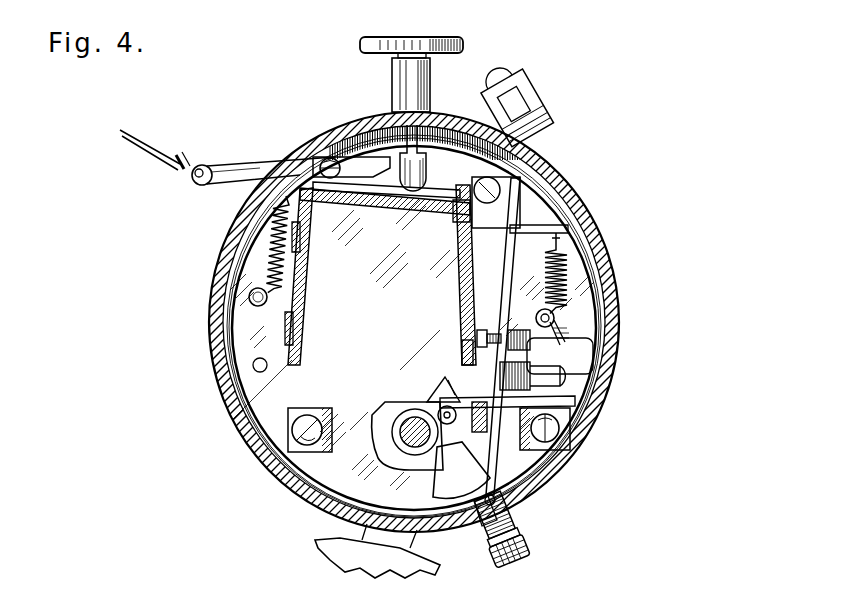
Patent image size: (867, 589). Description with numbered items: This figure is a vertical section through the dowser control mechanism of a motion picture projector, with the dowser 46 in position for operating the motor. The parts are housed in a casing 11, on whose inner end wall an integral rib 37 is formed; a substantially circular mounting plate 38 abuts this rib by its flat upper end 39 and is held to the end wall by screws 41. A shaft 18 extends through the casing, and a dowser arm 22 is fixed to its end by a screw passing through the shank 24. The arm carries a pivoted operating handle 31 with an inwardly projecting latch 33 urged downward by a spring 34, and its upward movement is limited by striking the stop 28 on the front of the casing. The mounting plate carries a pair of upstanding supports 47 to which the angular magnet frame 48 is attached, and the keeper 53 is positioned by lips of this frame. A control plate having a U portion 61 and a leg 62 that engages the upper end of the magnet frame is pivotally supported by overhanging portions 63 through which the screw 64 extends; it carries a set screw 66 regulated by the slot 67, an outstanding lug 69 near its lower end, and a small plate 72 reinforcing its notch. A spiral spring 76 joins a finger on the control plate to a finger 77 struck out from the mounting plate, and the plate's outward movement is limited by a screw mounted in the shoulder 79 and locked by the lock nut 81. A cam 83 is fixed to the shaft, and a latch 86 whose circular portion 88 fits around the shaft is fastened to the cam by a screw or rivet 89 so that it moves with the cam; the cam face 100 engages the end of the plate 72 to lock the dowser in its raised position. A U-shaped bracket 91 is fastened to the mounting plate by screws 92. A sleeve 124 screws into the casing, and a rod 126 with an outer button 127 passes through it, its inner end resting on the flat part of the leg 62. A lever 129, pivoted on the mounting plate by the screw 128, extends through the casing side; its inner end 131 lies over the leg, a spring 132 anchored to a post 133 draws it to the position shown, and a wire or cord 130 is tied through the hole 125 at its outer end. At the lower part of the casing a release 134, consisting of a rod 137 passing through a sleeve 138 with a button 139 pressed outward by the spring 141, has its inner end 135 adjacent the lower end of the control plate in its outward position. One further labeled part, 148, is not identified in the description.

The casing 11 is at (570, 190).
The rib 37 is at (556, 167).
The dowser arm 22 is at (516, 149).
The button 127 is at (465, 46).
The sleeve 124 is at (404, 73).
The rod 126 is at (426, 128).
The operating handle 31 is at (533, 82).
The latch 33 is at (538, 104).
The spring 34 is at (535, 128).
The inner end of lever 131 is at (362, 162).
The U portion 61 is at (437, 181).
The screw 128 is at (326, 158).
The lever 129 is at (231, 168).
The hole 125 is at (196, 184).
The wire or cord 130 is at (154, 154).
The leg 62 is at (420, 208).
The frame left bar 148 is at (305, 300).
The upstanding supports 47 is at (433, 294).
The keeper 53 is at (460, 294).
The screw 64 is at (453, 218).
The mounting plate 38 is at (412, 345).
The spring 132 is at (272, 233).
The post 133 is at (249, 297).
The screws 41 is at (258, 372).
The overhanging portions 63 is at (496, 203).
The shank 24 is at (537, 225).
The flat upper end 39 is at (506, 278).
The spiral spring 76 is at (564, 268).
The angular magnet frame 48 is at (536, 318).
The finger 77 is at (566, 328).
The set screw 66 is at (477, 339).
The slot 67 is at (531, 345).
The stop 28 is at (560, 356).
The lock nut 81 is at (500, 368).
The small plate 72 is at (560, 378).
The shoulder 79 is at (515, 398).
The circular portion 88 is at (395, 410).
The shaft 18 is at (400, 432).
The cam 83 is at (445, 383).
The cam face 100 is at (447, 385).
The screw or rivet 89 is at (440, 408).
The latch 86 is at (480, 428).
The inner end of release 135 is at (470, 488).
The outstanding lug 69 is at (503, 455).
The U-shaped bracket 91 is at (333, 435).
The screws 92 is at (292, 432).
The sleeve 138 is at (516, 511).
The spring 141 is at (522, 540).
The button 139 is at (509, 560).
The rod 137 is at (497, 552).
The release 134 is at (483, 533).
The dowser 46 is at (345, 553).